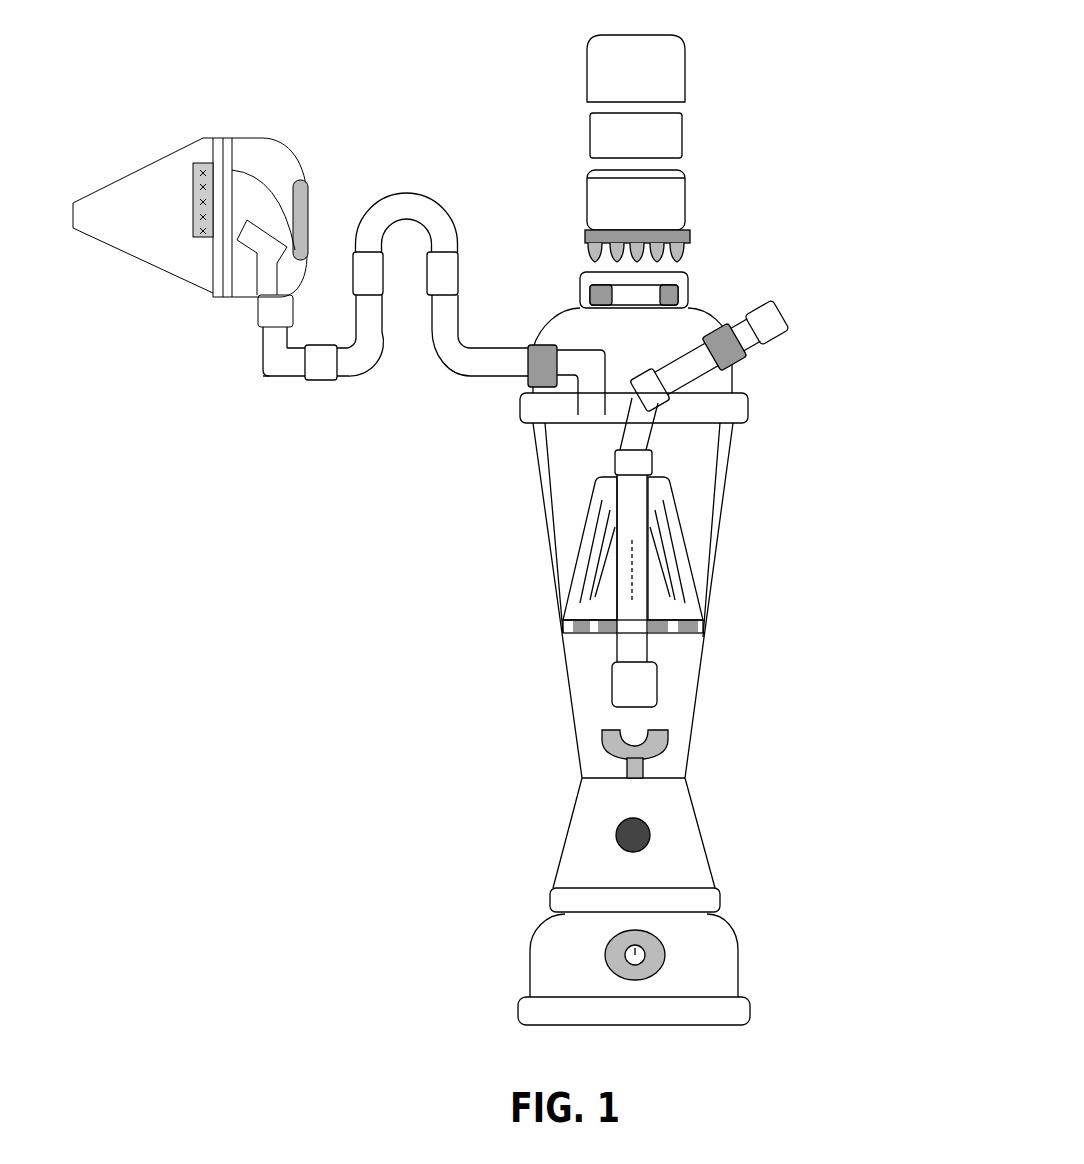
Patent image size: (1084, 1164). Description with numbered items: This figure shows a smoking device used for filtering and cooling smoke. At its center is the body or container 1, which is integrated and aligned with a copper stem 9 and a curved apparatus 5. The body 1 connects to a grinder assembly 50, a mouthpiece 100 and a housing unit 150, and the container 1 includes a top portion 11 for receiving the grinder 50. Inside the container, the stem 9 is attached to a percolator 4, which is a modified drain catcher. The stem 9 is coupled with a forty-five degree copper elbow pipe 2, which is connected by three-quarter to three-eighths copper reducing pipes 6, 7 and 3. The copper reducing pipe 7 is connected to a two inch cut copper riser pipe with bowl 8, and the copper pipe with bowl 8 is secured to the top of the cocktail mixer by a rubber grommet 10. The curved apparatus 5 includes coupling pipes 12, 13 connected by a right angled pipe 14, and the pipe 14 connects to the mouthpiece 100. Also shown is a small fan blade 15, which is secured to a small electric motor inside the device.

The body or container 1 is at (723, 548).
The 45 degree copper elbow pipe 2 is at (648, 433).
The copper reducing pipe 3 is at (620, 673).
The percolator 4 is at (583, 548).
The curved apparatus 5 is at (402, 190).
The copper reducing pipe 6 is at (668, 400).
The copper reducing pipe 7 is at (620, 458).
The copper riser pipe with bowl 8 is at (683, 378).
The copper stem 9 is at (635, 503).
The rubber grommet 10 is at (727, 333).
The top portion 11 is at (553, 323).
The coupling pipe 12 is at (458, 263).
The coupling pipe 13 is at (350, 265).
The right angled pipe 14 is at (260, 368).
The small fan blade 15 is at (650, 745).
The grinder assembly 50 is at (735, 206).
The mouthpiece 100 is at (240, 114).
The housing unit 150 is at (748, 928).